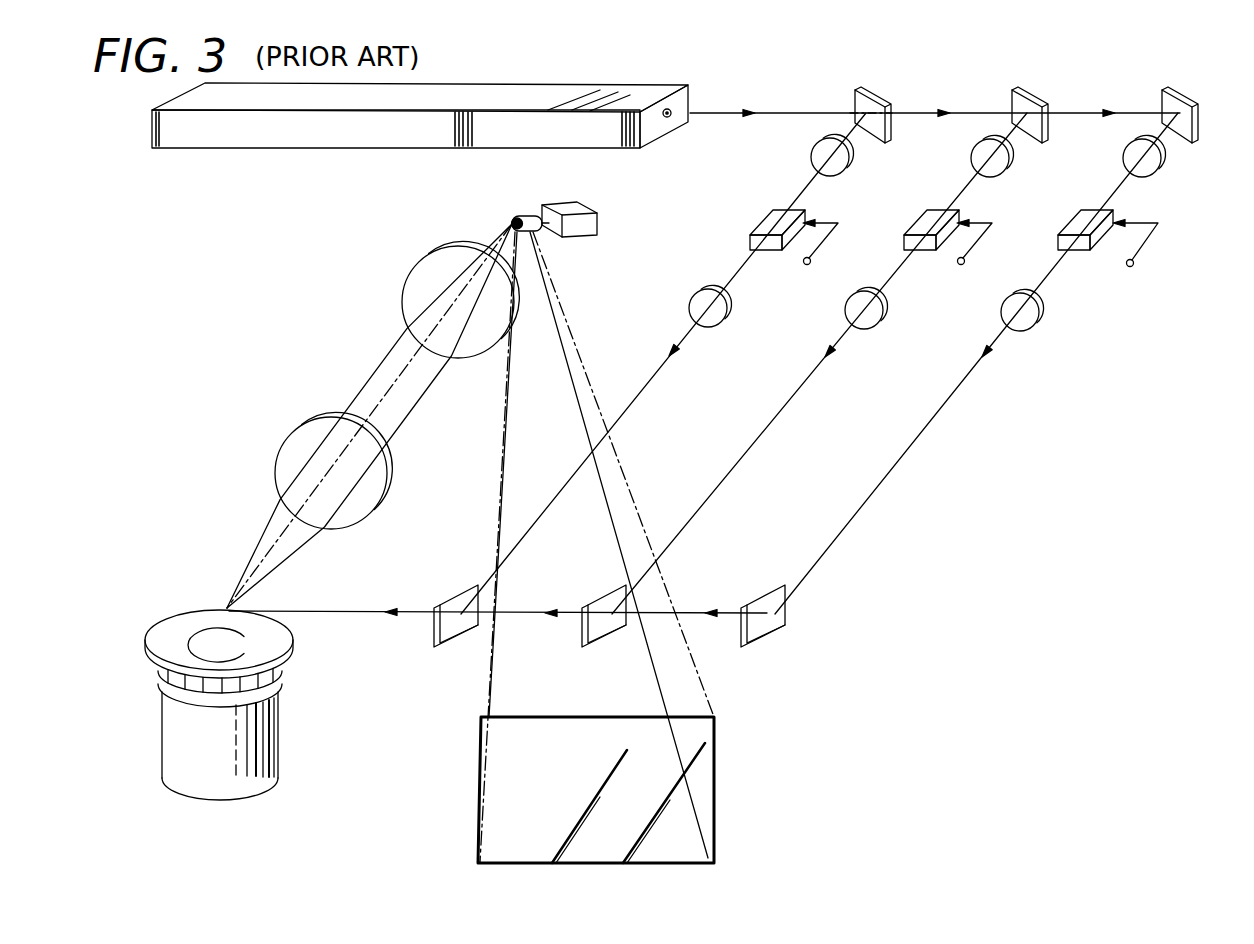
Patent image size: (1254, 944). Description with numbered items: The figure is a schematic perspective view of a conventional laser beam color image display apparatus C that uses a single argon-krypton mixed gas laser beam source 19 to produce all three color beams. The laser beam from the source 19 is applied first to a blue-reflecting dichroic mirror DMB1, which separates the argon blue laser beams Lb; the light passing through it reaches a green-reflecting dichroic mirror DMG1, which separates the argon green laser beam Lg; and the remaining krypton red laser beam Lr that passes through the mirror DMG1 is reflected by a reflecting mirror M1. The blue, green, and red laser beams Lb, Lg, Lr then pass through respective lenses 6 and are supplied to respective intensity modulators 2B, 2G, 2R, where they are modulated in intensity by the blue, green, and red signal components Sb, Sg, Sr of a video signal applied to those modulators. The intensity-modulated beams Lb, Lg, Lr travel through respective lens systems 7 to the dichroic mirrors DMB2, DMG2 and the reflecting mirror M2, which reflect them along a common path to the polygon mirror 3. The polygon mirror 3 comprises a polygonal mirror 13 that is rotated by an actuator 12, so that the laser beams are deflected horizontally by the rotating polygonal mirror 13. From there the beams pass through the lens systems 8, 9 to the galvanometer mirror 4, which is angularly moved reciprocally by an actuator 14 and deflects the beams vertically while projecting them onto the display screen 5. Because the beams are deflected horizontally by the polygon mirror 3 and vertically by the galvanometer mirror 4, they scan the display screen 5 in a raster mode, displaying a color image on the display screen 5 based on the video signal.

The argon-krypton mixed gas laser beam source 19 is at (557, 97).
The galvanometer mirror 4 is at (521, 214).
The actuator 14 is at (584, 205).
The laser beam color image display apparatus C is at (270, 252).
The lens system 8 is at (417, 265).
The lens system 9 is at (290, 437).
The polygon mirror 3 is at (265, 705).
The polygonal mirror 13 is at (290, 663).
The actuator 12 is at (267, 746).
The display screen 5 is at (718, 772).
The blue-reflecting dichroic mirror DMB1 is at (881, 100).
The green-reflecting dichroic mirror DMG1 is at (1038, 100).
The reflecting mirror M1 is at (1190, 100).
The dichroic mirror DMB2 is at (447, 597).
The dichroic mirror DMG2 is at (598, 597).
The reflecting mirror M2 is at (753, 598).
The blue laser beam Lb is at (805, 187).
The green laser beam Lg is at (963, 187).
The red laser beam Lr is at (1115, 187).
The lens 6 is at (849, 165).
The lens system 7 is at (724, 322).
The intensity modulator 2B is at (752, 222).
The intensity modulator 2G is at (906, 222).
The intensity modulator 2R is at (1060, 222).
The blue signal component Sb is at (812, 260).
The green signal component Sg is at (967, 260).
The red signal component Sr is at (1131, 260).